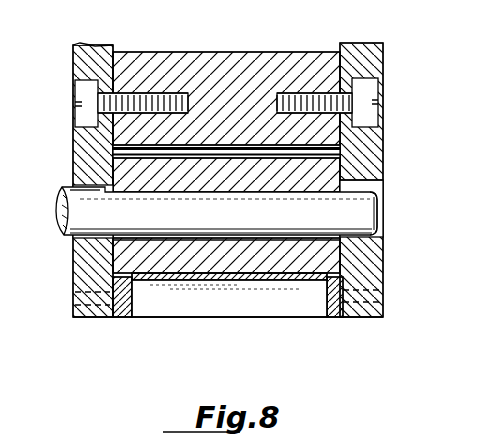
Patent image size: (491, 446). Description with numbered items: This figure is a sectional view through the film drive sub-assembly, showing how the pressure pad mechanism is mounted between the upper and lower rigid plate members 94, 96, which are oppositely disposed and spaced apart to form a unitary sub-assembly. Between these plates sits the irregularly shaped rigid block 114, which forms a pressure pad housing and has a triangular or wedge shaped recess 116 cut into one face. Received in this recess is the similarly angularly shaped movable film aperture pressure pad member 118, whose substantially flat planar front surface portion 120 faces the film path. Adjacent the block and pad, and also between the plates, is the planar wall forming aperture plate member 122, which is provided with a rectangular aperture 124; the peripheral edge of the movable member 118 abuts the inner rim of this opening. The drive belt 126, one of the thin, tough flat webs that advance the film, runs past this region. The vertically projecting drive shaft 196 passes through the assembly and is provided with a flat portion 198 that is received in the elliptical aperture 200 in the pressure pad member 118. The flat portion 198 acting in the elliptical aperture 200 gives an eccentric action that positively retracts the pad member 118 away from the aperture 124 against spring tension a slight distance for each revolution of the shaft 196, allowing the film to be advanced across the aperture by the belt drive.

The upper rigid plate member 94 is at (368, 315).
The lower rigid plate member 96 is at (98, 318).
The rigid block 114 is at (258, 56).
The wedge shaped recess 116 is at (113, 156).
The movable film aperture pressure pad member 118 is at (253, 265).
The flat planar front surface portion 120 is at (312, 275).
The aperture plate member 122 is at (127, 318).
The aperture 124 is at (195, 308).
The drive belt 126 is at (295, 278).
The drive shaft 196 is at (72, 212).
The flat portion 198 is at (368, 190).
The elliptical aperture 200 is at (130, 240).